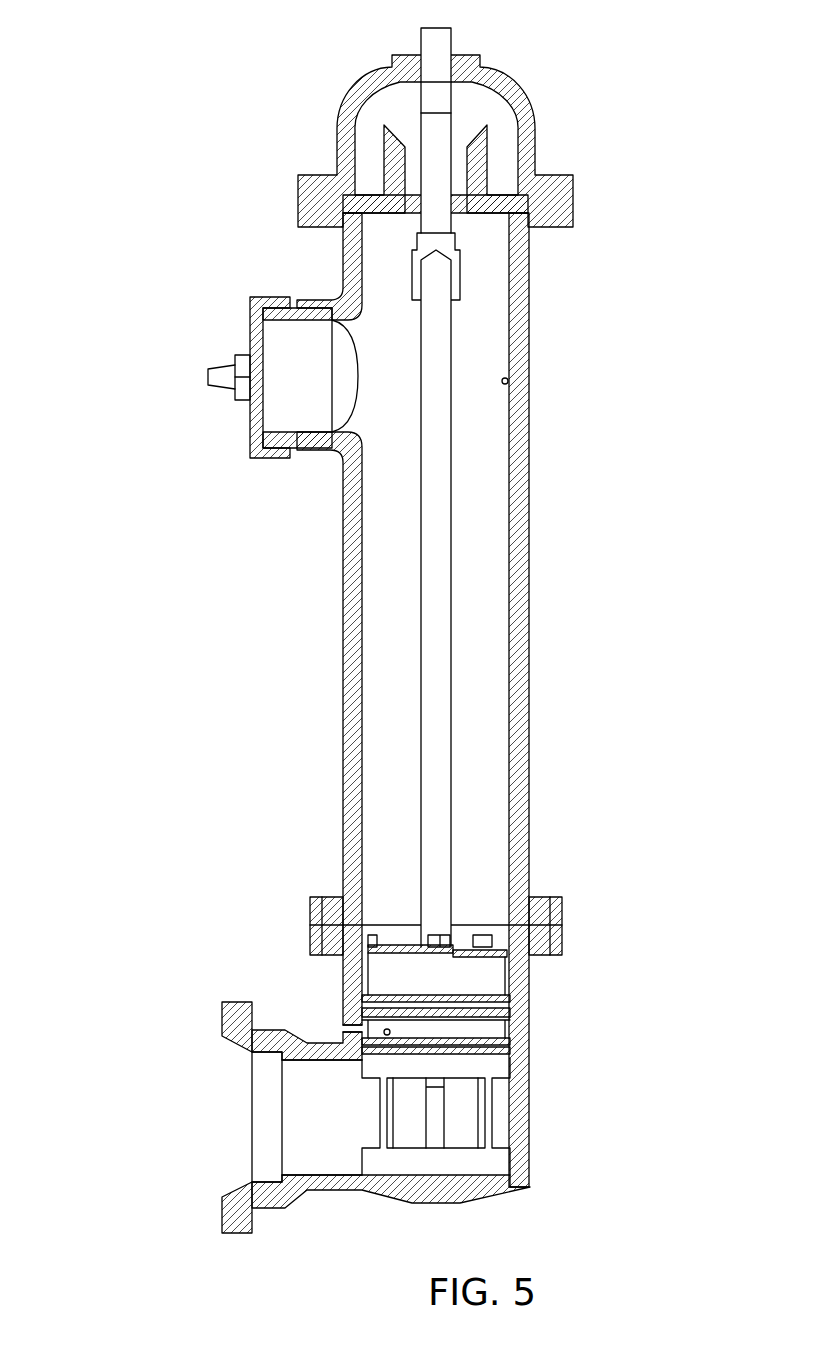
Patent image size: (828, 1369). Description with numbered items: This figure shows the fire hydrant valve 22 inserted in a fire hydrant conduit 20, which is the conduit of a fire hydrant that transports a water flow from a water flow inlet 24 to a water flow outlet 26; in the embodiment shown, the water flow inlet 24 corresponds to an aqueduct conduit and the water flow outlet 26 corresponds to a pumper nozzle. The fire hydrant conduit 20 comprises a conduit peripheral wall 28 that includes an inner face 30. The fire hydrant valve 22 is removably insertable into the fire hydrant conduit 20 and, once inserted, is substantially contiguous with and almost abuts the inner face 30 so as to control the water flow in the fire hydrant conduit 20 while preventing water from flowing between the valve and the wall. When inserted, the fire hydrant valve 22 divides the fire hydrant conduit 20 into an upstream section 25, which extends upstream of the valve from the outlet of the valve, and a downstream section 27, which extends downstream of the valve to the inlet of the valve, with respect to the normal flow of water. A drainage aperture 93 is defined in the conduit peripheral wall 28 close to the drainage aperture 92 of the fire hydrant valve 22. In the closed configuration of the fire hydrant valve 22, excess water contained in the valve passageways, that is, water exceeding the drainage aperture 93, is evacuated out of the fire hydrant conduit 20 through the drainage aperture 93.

The fire hydrant conduit 20 is at (250, 606).
The fire hydrant valve 22 is at (543, 1112).
The water flow inlet 24 is at (193, 1110).
The upstream section 25 is at (332, 1157).
The water flow outlet 26 is at (213, 407).
The downstream section 27 is at (492, 635).
The conduit peripheral wall 28 is at (530, 313).
The inner face 30 is at (508, 380).
The drainage aperture 92 is at (394, 1030).
The drainage aperture 93 is at (332, 1024).